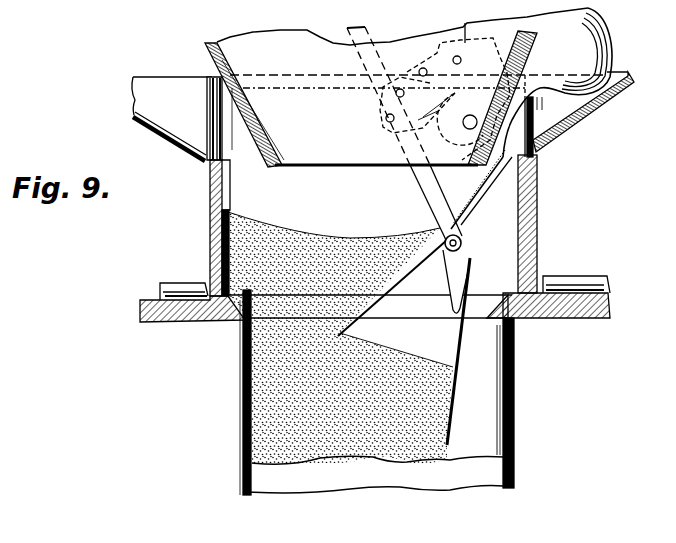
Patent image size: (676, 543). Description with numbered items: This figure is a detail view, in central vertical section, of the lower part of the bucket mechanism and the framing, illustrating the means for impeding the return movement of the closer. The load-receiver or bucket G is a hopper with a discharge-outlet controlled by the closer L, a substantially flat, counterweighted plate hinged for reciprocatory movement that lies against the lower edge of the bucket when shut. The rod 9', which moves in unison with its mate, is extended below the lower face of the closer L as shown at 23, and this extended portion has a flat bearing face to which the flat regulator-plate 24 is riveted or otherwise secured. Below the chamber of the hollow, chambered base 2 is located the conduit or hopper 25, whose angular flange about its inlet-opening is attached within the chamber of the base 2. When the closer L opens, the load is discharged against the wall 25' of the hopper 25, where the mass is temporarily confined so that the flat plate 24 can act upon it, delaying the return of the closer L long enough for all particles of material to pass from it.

The load-receiver or bucket G is at (233, 38).
The rod 9' is at (404, 127).
The chambered base 2 is at (533, 211).
The extended portion of rod 23 is at (462, 244).
The closer L is at (425, 258).
The flat regulator-plate 24 is at (460, 348).
The conduit or hopper 25 is at (519, 403).
The wall of hopper 25' is at (225, 392).